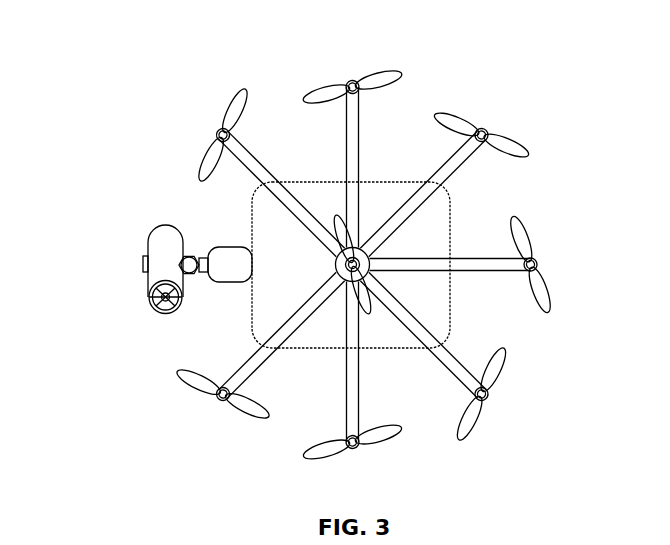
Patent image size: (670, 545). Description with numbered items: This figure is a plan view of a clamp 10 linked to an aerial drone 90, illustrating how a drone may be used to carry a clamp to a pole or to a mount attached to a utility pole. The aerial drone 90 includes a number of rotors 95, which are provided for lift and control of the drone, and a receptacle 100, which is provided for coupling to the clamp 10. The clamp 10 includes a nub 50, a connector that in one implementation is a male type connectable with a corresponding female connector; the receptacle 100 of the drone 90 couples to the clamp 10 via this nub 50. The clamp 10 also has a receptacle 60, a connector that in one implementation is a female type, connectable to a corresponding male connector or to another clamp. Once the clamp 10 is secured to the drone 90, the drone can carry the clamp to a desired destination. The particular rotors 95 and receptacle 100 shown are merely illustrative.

The clamp 10 is at (160, 233).
The nub 50 is at (200, 256).
The receptacle 60 is at (142, 263).
The aerial drone 90 is at (450, 303).
The rotors 95 is at (390, 68).
The receptacle 100 is at (227, 273).